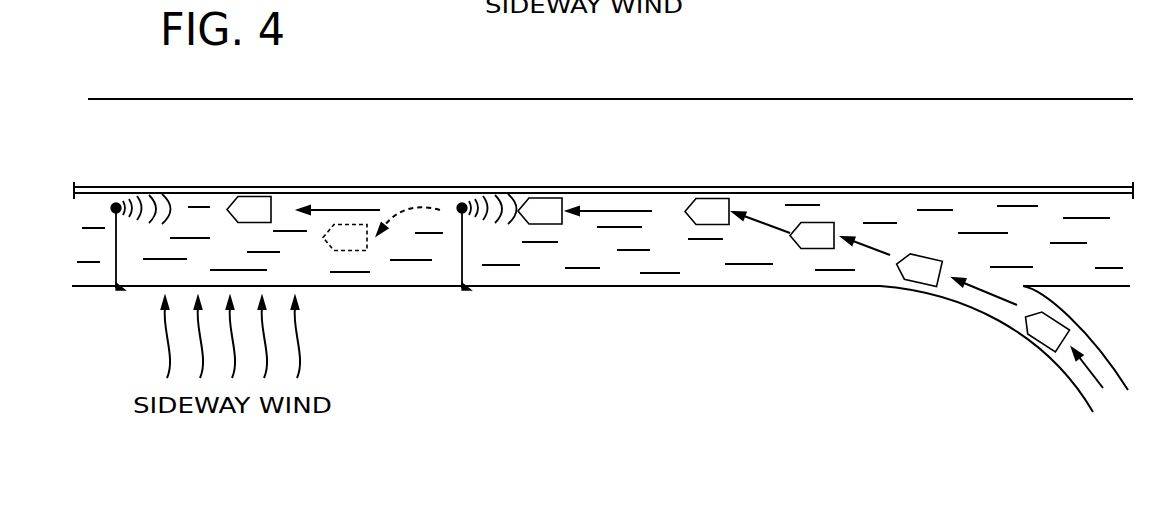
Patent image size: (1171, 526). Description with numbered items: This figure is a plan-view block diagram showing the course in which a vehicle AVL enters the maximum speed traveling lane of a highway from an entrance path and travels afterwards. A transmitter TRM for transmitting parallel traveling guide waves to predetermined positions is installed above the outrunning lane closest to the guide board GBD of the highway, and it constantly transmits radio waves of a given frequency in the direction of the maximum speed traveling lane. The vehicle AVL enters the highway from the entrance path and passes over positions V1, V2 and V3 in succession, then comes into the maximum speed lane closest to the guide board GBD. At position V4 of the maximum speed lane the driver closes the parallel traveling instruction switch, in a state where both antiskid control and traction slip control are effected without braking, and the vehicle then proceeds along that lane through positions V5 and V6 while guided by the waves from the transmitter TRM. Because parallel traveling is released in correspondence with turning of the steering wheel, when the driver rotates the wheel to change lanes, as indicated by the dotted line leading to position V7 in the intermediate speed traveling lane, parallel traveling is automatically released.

The guide board GBD is at (1015, 186).
The transmitter TRM is at (462, 210).
The vehicle AVL is at (1035, 342).
The position V1 is at (1043, 329).
The position V2 is at (918, 268).
The position V3 is at (812, 236).
The position V4 is at (707, 212).
The position V5 is at (540, 211).
The position V6 is at (249, 210).
The position V7 is at (345, 238).